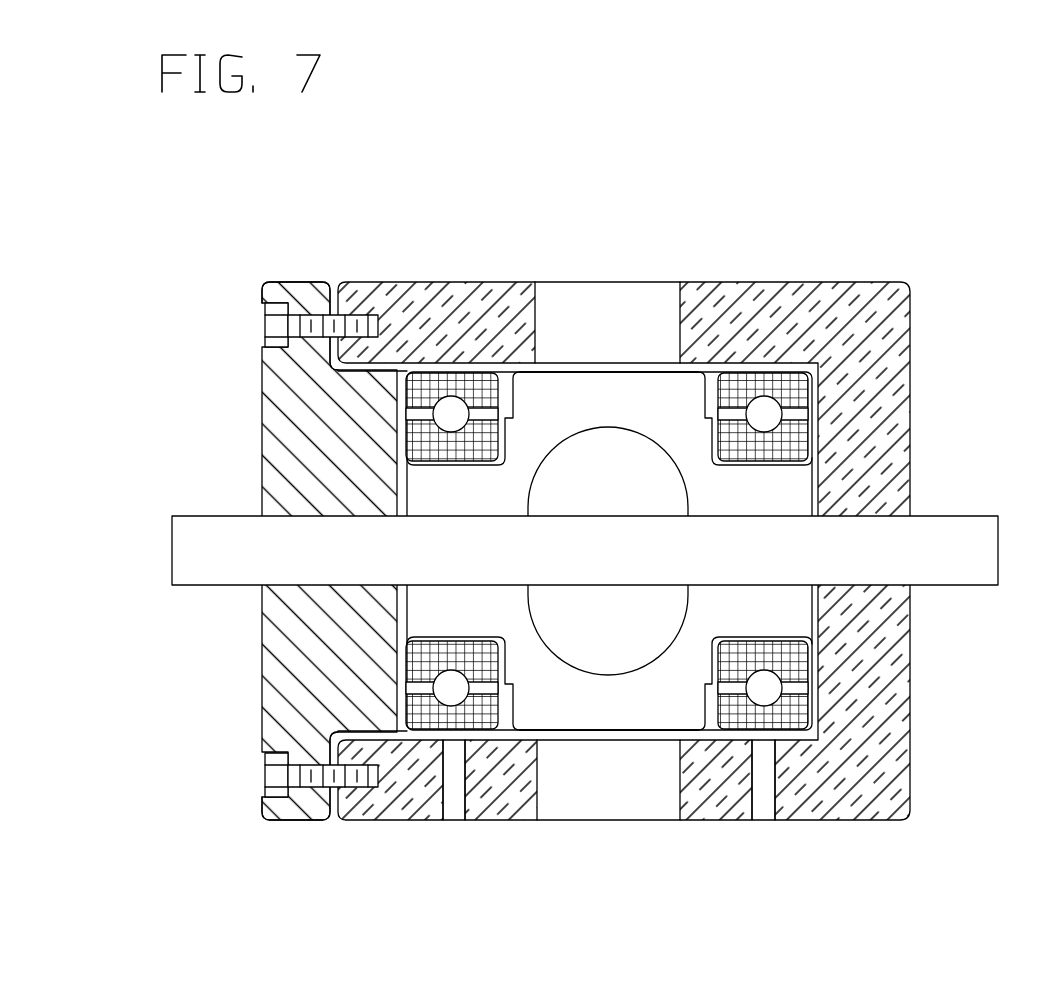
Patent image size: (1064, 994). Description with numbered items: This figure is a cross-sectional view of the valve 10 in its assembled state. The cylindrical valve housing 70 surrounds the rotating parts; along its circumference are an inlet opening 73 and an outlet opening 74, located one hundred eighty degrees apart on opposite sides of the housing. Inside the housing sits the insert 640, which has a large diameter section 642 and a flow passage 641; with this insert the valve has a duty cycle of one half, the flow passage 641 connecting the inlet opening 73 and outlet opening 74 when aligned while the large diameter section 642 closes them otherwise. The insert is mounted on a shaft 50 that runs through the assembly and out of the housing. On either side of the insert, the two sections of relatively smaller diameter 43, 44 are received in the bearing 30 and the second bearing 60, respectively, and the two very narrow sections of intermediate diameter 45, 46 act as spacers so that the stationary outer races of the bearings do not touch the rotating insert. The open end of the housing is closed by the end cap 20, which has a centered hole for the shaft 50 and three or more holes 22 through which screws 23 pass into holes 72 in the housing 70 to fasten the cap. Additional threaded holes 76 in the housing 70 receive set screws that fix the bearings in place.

The valve 10 is at (498, 242).
The end cap 20 is at (262, 416).
The holes 22 is at (297, 312).
The screws 23 is at (262, 336).
The bearing 30 is at (448, 372).
The section of relatively smaller diameter 43 is at (452, 496).
The section of relatively smaller diameter 44 is at (775, 613).
The narrow section of intermediate diameter 45 is at (507, 677).
The narrow section of intermediate diameter 46 is at (710, 663).
The shaft 50 is at (950, 575).
The second bearing 60 is at (768, 375).
The valve housing 70 is at (921, 305).
The holes 72 is at (352, 315).
The inlet opening 73 is at (653, 303).
The outlet opening 74 is at (652, 812).
The threaded holes 76 is at (458, 808).
The insert 640 is at (572, 400).
The flow passage 641 is at (606, 627).
The large diameter section 642 is at (582, 712).